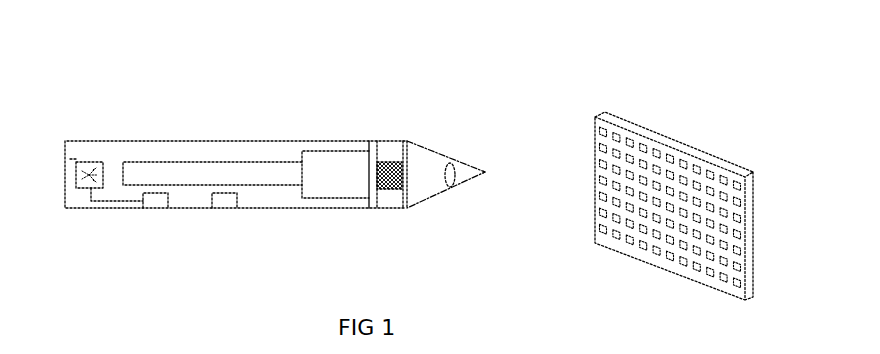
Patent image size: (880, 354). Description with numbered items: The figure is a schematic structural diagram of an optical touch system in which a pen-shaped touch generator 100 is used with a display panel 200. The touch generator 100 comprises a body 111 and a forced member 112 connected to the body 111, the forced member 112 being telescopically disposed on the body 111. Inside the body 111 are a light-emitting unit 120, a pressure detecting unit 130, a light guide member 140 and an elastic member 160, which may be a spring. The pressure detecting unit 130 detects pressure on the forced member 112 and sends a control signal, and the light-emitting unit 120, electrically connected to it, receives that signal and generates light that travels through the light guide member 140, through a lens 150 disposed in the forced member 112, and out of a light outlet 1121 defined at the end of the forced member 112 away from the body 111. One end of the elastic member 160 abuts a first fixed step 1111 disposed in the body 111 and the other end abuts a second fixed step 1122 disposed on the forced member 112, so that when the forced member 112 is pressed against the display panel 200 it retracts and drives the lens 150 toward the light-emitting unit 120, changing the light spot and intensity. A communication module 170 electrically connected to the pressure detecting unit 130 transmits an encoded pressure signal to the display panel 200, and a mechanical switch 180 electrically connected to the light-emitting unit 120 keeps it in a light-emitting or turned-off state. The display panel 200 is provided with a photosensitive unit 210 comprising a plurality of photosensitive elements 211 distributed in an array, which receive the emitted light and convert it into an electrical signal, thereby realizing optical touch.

The touch generator 100 is at (243, 83).
The body 111 is at (270, 141).
The first fixed step 1111 is at (372, 204).
The forced member 112 is at (421, 148).
The light outlet 1121 is at (486, 170).
The second fixed step 1122 is at (403, 141).
The light-emitting unit 120 is at (97, 161).
The pressure detecting unit 130 is at (336, 155).
The light guide member 140 is at (193, 163).
The lens 150 is at (455, 186).
The elastic member 160 is at (386, 192).
The communication module 170 is at (228, 206).
The mechanical switch 180 is at (150, 206).
The display panel 200 is at (606, 98).
The photosensitive unit 210 is at (659, 148).
The photosensitive elements 211 is at (707, 177).